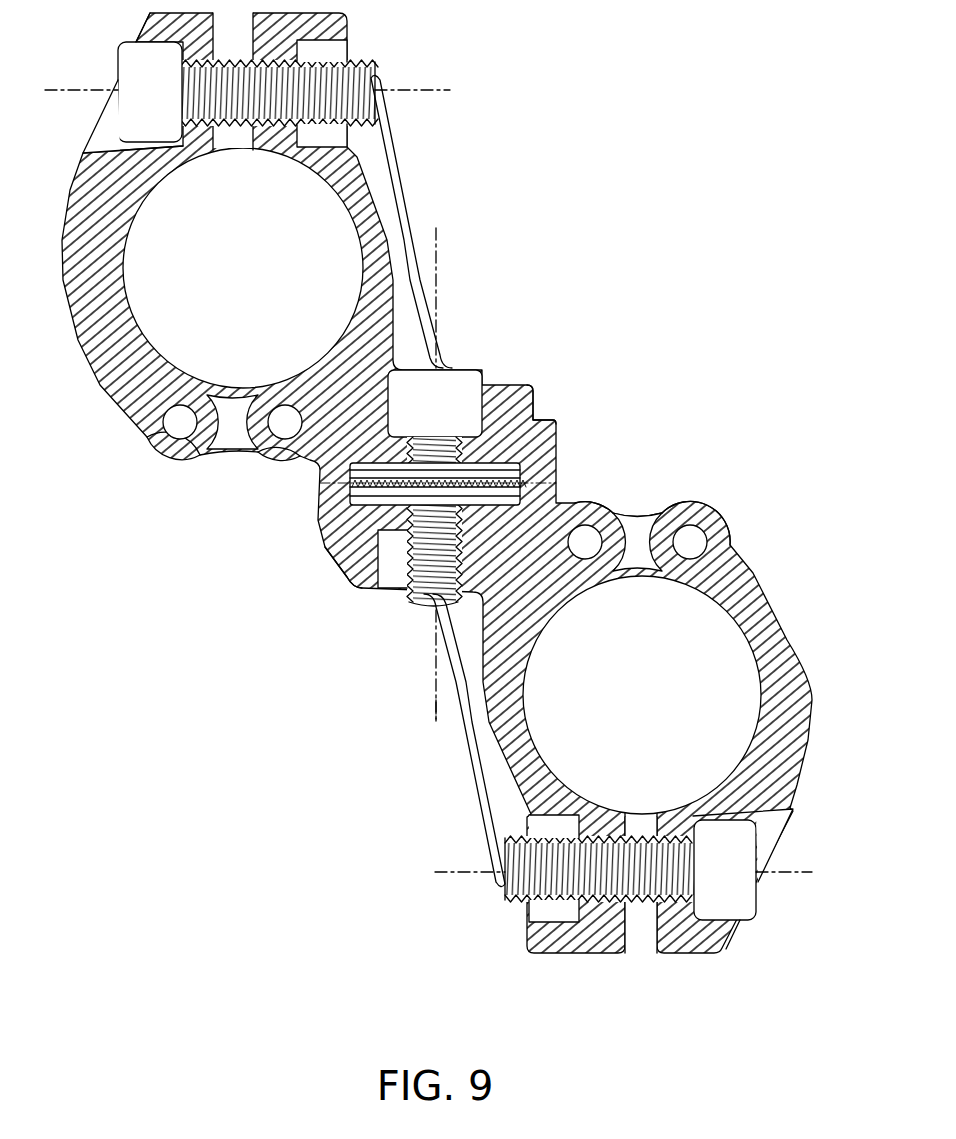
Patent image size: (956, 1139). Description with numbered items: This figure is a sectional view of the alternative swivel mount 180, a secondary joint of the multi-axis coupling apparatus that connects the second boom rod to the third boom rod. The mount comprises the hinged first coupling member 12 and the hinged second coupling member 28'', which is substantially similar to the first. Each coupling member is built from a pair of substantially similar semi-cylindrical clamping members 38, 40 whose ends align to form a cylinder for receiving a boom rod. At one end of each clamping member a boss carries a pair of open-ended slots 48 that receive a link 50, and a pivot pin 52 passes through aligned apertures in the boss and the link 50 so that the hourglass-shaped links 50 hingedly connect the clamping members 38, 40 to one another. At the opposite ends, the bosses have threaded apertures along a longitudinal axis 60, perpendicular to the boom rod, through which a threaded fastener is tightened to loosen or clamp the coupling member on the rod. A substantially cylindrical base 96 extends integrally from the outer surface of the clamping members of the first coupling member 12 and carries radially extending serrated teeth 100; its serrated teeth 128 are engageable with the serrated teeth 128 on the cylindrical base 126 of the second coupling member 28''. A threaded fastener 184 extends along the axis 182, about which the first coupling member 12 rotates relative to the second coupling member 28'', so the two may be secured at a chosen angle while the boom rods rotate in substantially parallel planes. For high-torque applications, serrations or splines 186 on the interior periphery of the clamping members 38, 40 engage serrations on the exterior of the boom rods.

The hinged first coupling member 12 is at (437, 207).
The hinged second coupling member 28'' is at (398, 731).
The semi-cylindrical clamping member 38 is at (80, 355).
The semi-cylindrical clamping member 40 is at (399, 166).
The open-ended slot 48 is at (206, 394).
The link 50 is at (233, 405).
The pivot pin 52 is at (182, 410).
The longitudinal axis 60 is at (80, 88).
The cylindrical base 96 is at (545, 430).
The serrated teeth 100 is at (550, 472).
The cylindrical base 126 is at (328, 552).
The serrated teeth 128 is at (318, 499).
The alternative swivel mount 180 is at (494, 285).
The axis 182 is at (434, 684).
The threaded fastener 184 is at (470, 370).
The serrations or splines 186 is at (355, 272).